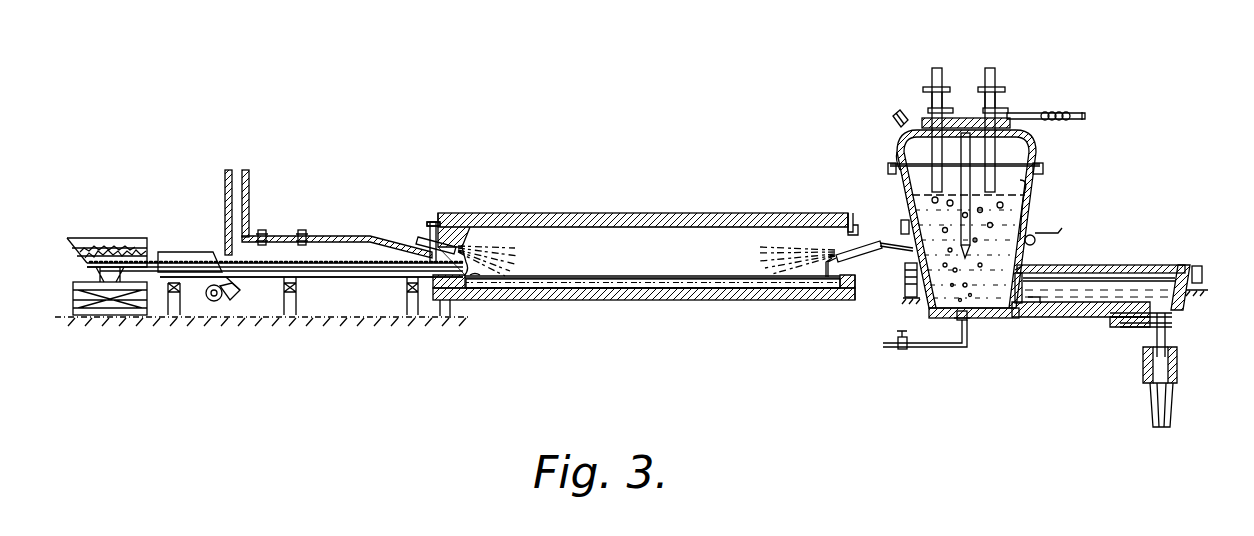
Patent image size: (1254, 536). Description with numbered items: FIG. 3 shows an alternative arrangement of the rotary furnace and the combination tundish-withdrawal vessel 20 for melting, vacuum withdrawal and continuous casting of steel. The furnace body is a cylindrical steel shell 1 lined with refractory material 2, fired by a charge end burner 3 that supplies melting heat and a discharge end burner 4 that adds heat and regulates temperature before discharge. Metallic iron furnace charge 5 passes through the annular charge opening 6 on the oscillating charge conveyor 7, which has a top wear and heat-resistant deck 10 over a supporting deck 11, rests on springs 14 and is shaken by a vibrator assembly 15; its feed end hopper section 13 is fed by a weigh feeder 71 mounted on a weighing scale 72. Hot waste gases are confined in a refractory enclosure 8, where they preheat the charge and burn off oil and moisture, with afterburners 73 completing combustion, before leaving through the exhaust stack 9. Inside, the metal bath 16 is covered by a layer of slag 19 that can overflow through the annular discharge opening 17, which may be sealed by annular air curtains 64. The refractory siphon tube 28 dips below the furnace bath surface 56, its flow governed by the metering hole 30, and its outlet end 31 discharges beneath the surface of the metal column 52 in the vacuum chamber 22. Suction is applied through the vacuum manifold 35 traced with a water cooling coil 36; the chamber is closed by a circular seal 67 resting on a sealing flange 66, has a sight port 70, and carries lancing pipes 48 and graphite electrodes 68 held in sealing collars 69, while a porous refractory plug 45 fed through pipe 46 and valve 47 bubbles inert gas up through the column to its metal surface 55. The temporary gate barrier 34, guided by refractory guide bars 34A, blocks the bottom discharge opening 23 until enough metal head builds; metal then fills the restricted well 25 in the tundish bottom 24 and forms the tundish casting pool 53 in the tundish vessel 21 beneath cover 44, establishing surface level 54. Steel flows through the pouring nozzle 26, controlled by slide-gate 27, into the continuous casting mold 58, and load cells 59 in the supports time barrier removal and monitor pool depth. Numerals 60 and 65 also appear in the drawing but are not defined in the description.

The cylindrical steel shell 1 is at (587, 214).
The refractory material 2 is at (572, 228).
The charge end burner 3 is at (467, 243).
The discharge end burner 4 is at (840, 243).
The metallic iron furnace charge 5 is at (470, 278).
The annular charge opening 6 is at (444, 310).
The oscillating charge conveyor 7 is at (260, 265).
The refractory enclosure 8 is at (347, 236).
The exhaust stack 9 is at (224, 186).
The top wear and heat-resistant deck 10 is at (395, 279).
The supporting deck 11 is at (345, 280).
The feed end hopper section 13 is at (200, 253).
The springs 14 is at (283, 297).
The vibrator assembly 15 is at (222, 300).
The metal bath 16 is at (678, 278).
The annular discharge opening 17 is at (852, 215).
The layer of slag 19 is at (638, 277).
The combination tundish-withdrawal vessel 20 is at (1082, 213).
The continuous casting tundish vessel 21 is at (1070, 318).
The vacuum chamber 22 is at (900, 188).
The bottom discharge opening 23 is at (997, 313).
The tundish bottom 24 is at (1100, 309).
The restricted well 25 is at (1030, 307).
The steel pouring nozzle 26 is at (1177, 313).
The slide-gate 27 is at (1170, 327).
The siphon tube 28 is at (853, 293).
The metering hole 30 is at (897, 272).
The outlet end 31 is at (900, 222).
The temporary gate barrier 34 is at (1028, 270).
The refractory guide bars 34A is at (1020, 320).
The vacuum manifold 35 is at (1085, 114).
The water cooling coil 36 is at (1055, 112).
The cover 44 is at (1082, 263).
The porous refractory plug 45 is at (955, 322).
The pipe 46 is at (948, 348).
The valve 47 is at (903, 352).
The lancing pipes 48 is at (966, 133).
The metal column 52 is at (1022, 234).
The tundish casting pool 53 is at (1100, 284).
The surface level 54 is at (1150, 273).
The metal surface 55 is at (1026, 184).
The furnace bath surface 56 is at (737, 276).
The continuous casting mold 58 is at (1178, 371).
The load cells 59 is at (1197, 268).
The discharge spout 60 is at (1173, 408).
The annular air curtains 64 is at (430, 222).
The burner pipe 65 is at (430, 228).
The sealing flange 66 is at (1043, 172).
The circular seal 67 is at (1040, 163).
The graphite electrodes 68 is at (995, 80).
The sealing collars 69 is at (1005, 90).
The sight port 70 is at (902, 120).
The weigh feeder 71 is at (83, 263).
The weighing scale 72 is at (83, 307).
The afterburners 73 is at (302, 230).